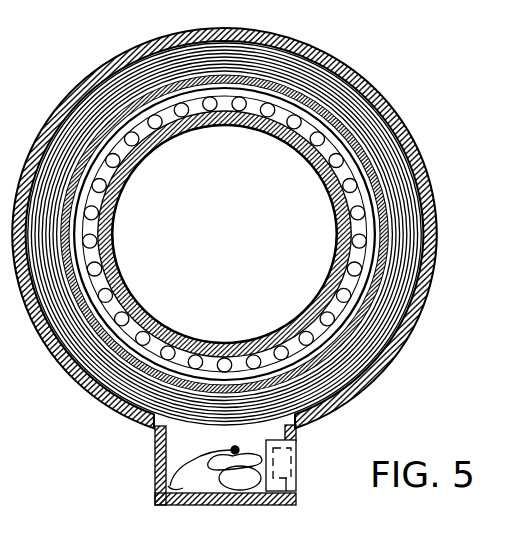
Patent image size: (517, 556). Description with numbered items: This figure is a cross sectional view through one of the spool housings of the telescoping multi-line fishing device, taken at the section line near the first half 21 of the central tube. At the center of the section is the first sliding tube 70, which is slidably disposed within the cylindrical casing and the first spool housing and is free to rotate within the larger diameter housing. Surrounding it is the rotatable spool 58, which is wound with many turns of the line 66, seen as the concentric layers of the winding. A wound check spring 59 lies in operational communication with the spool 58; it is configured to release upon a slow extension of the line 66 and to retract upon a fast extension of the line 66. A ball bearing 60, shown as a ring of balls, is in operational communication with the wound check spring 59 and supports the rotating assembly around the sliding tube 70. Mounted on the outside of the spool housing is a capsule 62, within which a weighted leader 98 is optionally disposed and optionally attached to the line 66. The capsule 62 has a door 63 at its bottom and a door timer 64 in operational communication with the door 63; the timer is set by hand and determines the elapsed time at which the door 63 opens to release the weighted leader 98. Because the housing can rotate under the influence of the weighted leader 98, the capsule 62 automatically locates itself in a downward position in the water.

The first half 21 is at (403, 328).
The rotatable spool 58 is at (383, 227).
The wound check spring 59 is at (320, 117).
The ball bearing 60 is at (300, 124).
The capsule 62 is at (214, 485).
The door 63 is at (177, 496).
The door timer 64 is at (290, 453).
The line 66 is at (387, 157).
The first sliding tube 70 is at (320, 180).
The weighted leader 98 is at (180, 450).